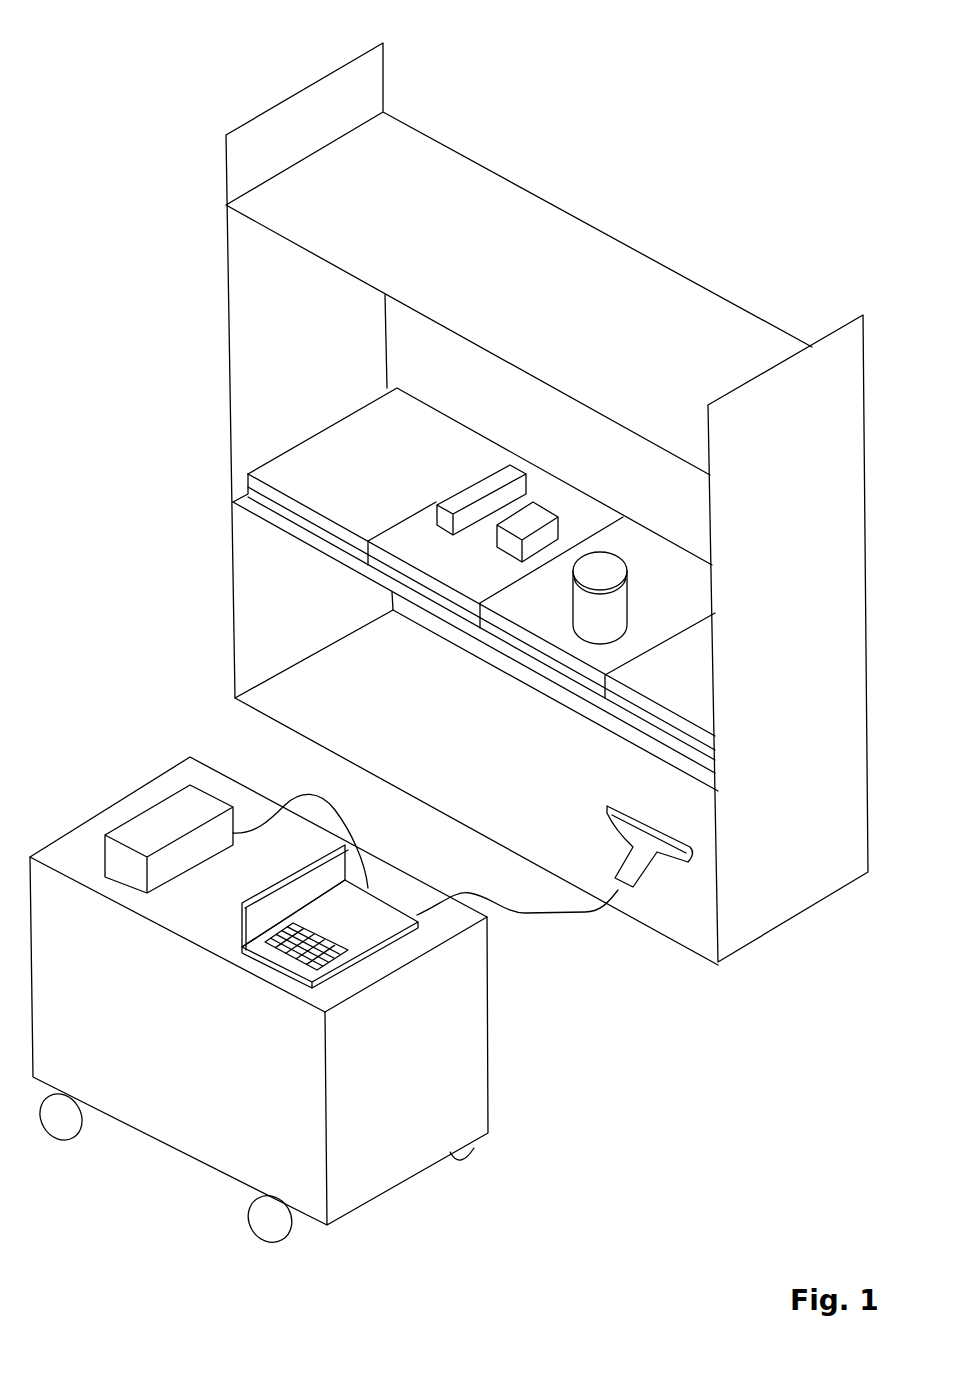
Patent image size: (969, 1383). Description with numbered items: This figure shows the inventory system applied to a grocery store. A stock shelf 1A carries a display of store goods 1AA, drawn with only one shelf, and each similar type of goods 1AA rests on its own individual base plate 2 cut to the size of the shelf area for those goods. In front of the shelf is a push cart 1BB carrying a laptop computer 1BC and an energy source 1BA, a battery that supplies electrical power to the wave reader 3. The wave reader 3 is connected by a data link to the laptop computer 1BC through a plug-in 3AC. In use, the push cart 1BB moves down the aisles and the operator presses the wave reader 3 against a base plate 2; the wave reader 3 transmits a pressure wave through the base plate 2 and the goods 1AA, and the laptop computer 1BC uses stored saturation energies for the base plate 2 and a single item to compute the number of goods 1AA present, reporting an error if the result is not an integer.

The stock shelf 1A is at (293, 93).
The store goods 1AA is at (599, 540).
The base plate 2 is at (417, 510).
The energy source (battery) 1BA is at (183, 783).
The push cart 1BB is at (408, 1183).
The laptop computer 1BC is at (288, 990).
The plug-in 3AC is at (373, 867).
The wave reader 3 is at (628, 897).